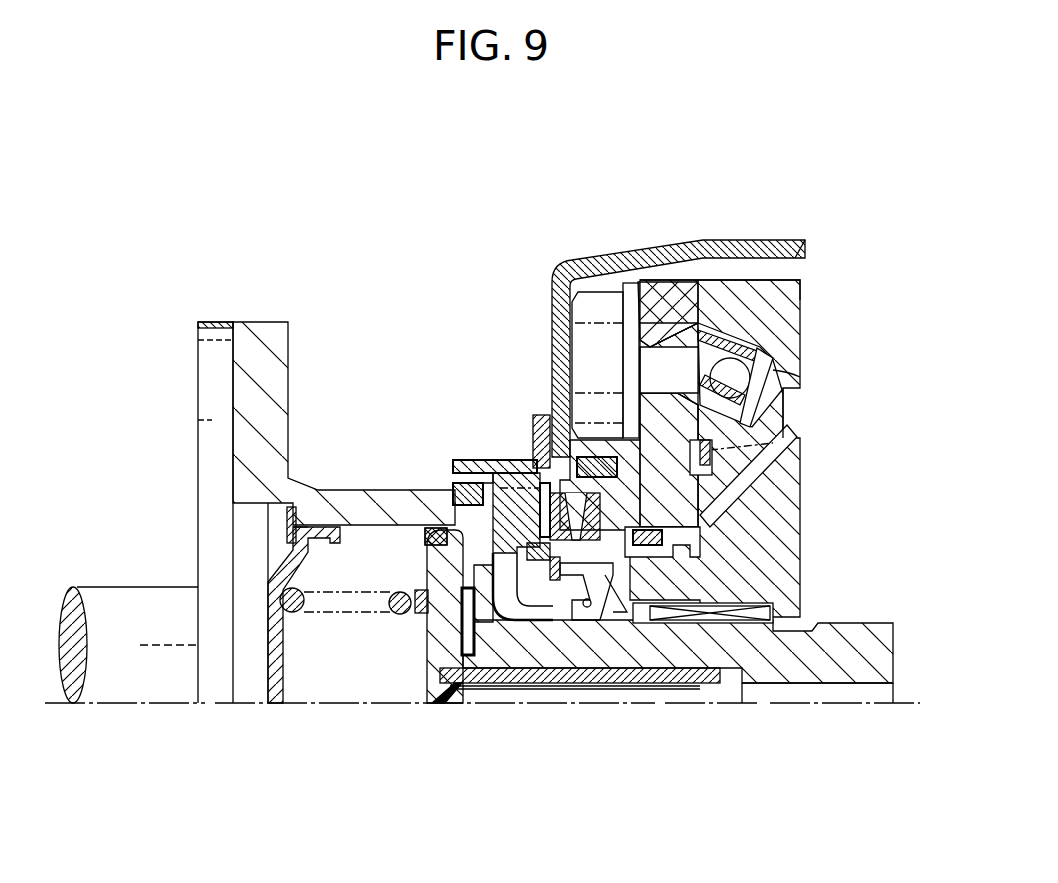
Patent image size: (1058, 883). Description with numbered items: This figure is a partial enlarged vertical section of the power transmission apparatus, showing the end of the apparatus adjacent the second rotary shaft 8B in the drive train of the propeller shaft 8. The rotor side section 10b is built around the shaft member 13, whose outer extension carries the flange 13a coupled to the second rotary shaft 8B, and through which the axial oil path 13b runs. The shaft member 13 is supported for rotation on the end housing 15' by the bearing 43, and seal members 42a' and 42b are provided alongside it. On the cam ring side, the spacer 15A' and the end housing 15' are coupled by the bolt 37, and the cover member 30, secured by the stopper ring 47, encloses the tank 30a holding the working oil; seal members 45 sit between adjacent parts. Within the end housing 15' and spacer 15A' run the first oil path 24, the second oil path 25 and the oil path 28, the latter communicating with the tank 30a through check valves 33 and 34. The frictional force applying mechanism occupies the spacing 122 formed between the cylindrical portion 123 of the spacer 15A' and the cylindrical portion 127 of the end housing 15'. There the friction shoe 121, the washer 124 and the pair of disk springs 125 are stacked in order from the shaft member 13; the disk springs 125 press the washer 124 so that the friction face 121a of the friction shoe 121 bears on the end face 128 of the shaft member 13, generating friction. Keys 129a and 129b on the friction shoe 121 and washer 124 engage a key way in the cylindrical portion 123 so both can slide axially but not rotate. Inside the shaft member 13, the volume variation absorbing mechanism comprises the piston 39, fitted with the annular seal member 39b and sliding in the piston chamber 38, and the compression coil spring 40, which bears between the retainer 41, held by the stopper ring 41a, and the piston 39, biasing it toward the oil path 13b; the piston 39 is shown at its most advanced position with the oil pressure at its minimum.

The propeller shaft 8 is at (216, 322).
The second rotary shaft 8B is at (133, 590).
The shaft member 13 is at (812, 680).
The flange 13a is at (272, 330).
The oil path 13b is at (878, 690).
The rotor side section 10b is at (356, 372).
The end housing 15' is at (709, 448).
The spacer 15A' is at (757, 289).
The first oil path 24 is at (775, 457).
The second oil path 25 is at (741, 446).
The oil path 28 is at (778, 386).
The cover member 30 is at (745, 242).
The tank 30a is at (795, 270).
The check valve 33 is at (775, 370).
The check valve 34 is at (674, 335).
The bolt 37 is at (608, 300).
The piston chamber 38 is at (383, 686).
The volume variation absorbing piston 39 is at (430, 640).
The annular seal member 39b is at (425, 528).
The compression coil spring 40 is at (299, 596).
The retainer 41 is at (284, 660).
The stopper ring 41a is at (292, 505).
The seal member 42a' is at (530, 674).
The seal member 42b is at (455, 485).
The bearing 43 is at (748, 625).
The seal member 45 is at (660, 540).
The stopper ring 47 is at (543, 413).
The friction shoe 121 is at (472, 453).
The friction face 121a is at (410, 540).
The spacing 122 is at (525, 457).
The cylindrical portion 123 is at (467, 457).
The washer 124 is at (497, 610).
The disk spring 125 is at (603, 595).
The cylindrical portion 127 is at (627, 612).
The end face 128 is at (508, 560).
The key 129a is at (477, 457).
The key 129b is at (513, 463).